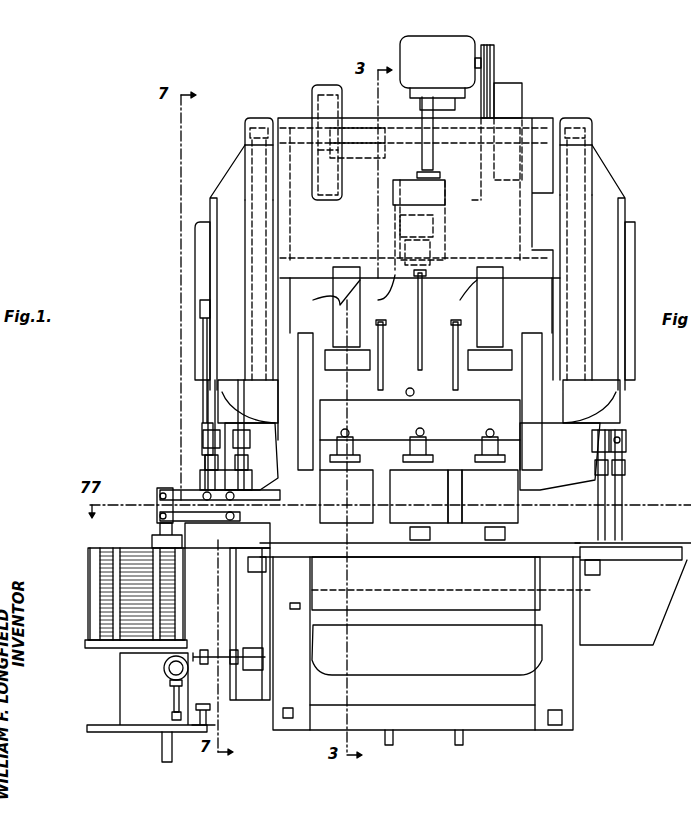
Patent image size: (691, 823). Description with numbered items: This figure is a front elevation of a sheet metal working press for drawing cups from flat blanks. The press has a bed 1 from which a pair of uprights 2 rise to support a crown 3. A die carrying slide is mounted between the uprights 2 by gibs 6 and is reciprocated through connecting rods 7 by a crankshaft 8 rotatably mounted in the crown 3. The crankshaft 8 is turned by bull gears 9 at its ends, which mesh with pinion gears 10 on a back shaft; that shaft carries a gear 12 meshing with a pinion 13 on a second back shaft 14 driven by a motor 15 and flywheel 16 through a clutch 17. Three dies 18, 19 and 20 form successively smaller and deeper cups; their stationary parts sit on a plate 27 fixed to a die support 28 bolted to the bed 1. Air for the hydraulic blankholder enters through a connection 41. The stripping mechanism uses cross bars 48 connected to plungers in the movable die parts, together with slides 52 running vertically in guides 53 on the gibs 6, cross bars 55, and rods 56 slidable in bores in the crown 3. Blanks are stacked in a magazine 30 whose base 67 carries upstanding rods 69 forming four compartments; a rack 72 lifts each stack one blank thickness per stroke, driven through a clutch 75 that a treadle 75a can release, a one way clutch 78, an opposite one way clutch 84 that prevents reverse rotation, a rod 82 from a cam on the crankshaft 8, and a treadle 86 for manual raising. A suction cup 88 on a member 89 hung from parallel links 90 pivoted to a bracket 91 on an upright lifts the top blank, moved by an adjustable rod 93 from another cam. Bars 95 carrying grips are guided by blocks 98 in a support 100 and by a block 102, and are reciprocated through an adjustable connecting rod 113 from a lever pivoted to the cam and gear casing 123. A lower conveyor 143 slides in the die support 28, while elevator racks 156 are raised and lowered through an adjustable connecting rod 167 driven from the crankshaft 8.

The bed 1 is at (560, 688).
The uprights 2 is at (300, 430).
The crown 3 is at (542, 118).
The gibs 6 is at (298, 362).
The connecting rods 7 is at (345, 318).
The crankshaft 8 is at (472, 232).
The bull gears 9 is at (245, 170).
The pinion gears 10 is at (258, 118).
The gear 12 is at (325, 88).
The pinion 13 is at (330, 150).
The second back shaft 14 is at (358, 125).
The motor 15 is at (443, 42).
The flywheel 16 is at (512, 90).
The clutch 17 is at (460, 175).
The die 18 is at (365, 517).
The die 19 is at (428, 517).
The die 20 is at (505, 517).
The plate 27 is at (462, 548).
The die support 28 is at (404, 577).
The magazine 30 is at (97, 654).
The connection 41 is at (411, 396).
The cross bars 48 is at (353, 450).
The slides 52 is at (417, 423).
The guides 53 is at (335, 418).
The cross bars 55 is at (415, 315).
The rods 56 is at (383, 346).
The base 67 is at (88, 645).
The rods 69 is at (115, 568).
The rack 72 is at (162, 757).
The clutch 75 is at (165, 670).
The treadle 75a is at (172, 714).
The one way clutch 78 is at (265, 675).
The rod 82 is at (205, 478).
The one way clutch 84 is at (232, 664).
The treadle 86 is at (210, 708).
The suction cup 88 is at (152, 542).
The member 89 is at (160, 500).
The parallel links 90 is at (170, 515).
The bracket 91 is at (268, 498).
The adjustable rod 93 is at (203, 333).
The bars 95 is at (603, 455).
The blocks 98 is at (262, 570).
The support 100 is at (265, 625).
The block 102 is at (663, 543).
The adjustable connecting rod 113 is at (622, 490).
The cam and gear casing 123 is at (222, 240).
The lower conveyor 143 is at (575, 600).
The racks 156 is at (388, 745).
The adjustable connecting rod 167 is at (240, 478).